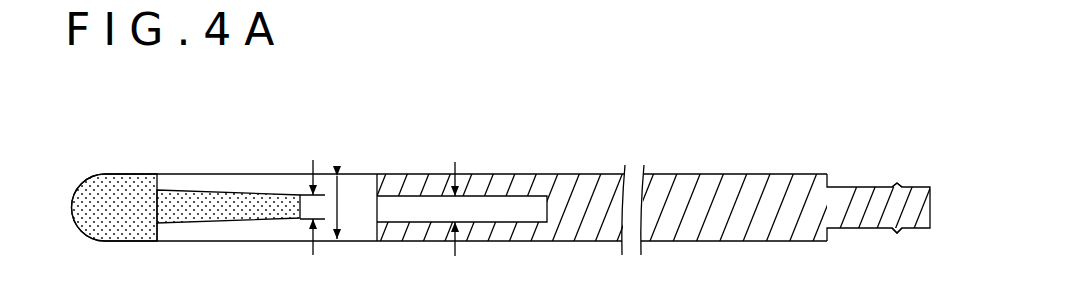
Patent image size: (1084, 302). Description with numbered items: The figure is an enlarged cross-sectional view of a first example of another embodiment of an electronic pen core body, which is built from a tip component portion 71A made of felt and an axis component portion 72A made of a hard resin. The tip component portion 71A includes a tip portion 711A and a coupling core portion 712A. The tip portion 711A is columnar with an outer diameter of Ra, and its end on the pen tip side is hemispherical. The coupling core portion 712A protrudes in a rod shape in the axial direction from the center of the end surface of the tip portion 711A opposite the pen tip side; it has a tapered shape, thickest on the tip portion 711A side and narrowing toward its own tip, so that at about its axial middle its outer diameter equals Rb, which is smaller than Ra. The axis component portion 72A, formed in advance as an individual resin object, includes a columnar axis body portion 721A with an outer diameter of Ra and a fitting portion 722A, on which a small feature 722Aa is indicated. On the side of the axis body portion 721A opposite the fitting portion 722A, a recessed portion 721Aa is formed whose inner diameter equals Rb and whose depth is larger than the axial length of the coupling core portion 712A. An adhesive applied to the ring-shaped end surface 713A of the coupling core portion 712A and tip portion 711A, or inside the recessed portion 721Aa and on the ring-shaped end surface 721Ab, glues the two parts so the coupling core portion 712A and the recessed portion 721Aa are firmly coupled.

The tip component portion 71A is at (238, 101).
The tip portion 711A is at (113, 183).
The coupling core portion 712A is at (193, 191).
The ring-shaped end surface 713A is at (158, 228).
The outer diameter Ra is at (340, 205).
The outer diameter Rb is at (313, 207).
The axis component portion 72A is at (890, 122).
The axis body portion 721A is at (747, 188).
The recessed portion 721Aa is at (495, 204).
The ring-shaped end surface 721Ab is at (376, 232).
The fitting portion 722A is at (842, 197).
The groove/protrusion of shaft 722Aa is at (897, 234).